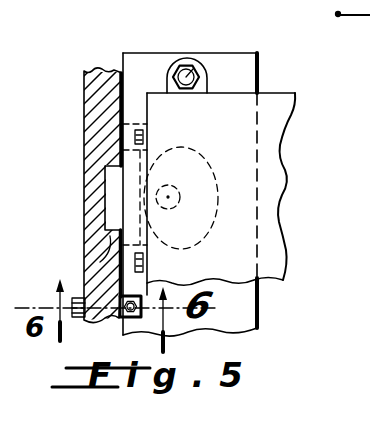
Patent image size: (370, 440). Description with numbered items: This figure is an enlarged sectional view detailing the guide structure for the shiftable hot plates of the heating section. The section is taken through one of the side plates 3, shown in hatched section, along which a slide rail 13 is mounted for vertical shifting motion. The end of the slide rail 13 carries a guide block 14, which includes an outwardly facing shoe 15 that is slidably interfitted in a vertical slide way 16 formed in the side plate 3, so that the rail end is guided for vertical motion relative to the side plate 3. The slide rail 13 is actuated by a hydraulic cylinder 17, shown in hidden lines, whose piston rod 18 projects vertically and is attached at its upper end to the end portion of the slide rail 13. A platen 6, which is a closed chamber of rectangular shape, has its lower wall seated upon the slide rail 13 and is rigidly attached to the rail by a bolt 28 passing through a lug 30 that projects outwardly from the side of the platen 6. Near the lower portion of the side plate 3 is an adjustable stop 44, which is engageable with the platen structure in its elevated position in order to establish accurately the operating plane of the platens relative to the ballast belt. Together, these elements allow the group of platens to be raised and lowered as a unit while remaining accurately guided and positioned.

The side plate 3 is at (94, 133).
The platen 6 is at (268, 168).
The slide rail 13 is at (243, 301).
The guide block 14 is at (146, 179).
The shoe 15 is at (118, 196).
The vertical slide way 16 is at (97, 252).
The hydraulic cylinder 17 is at (204, 161).
The piston rod 18 is at (181, 197).
The bolt 28 is at (199, 56).
The lug 30 is at (208, 84).
The adjustable stop 44 is at (148, 291).